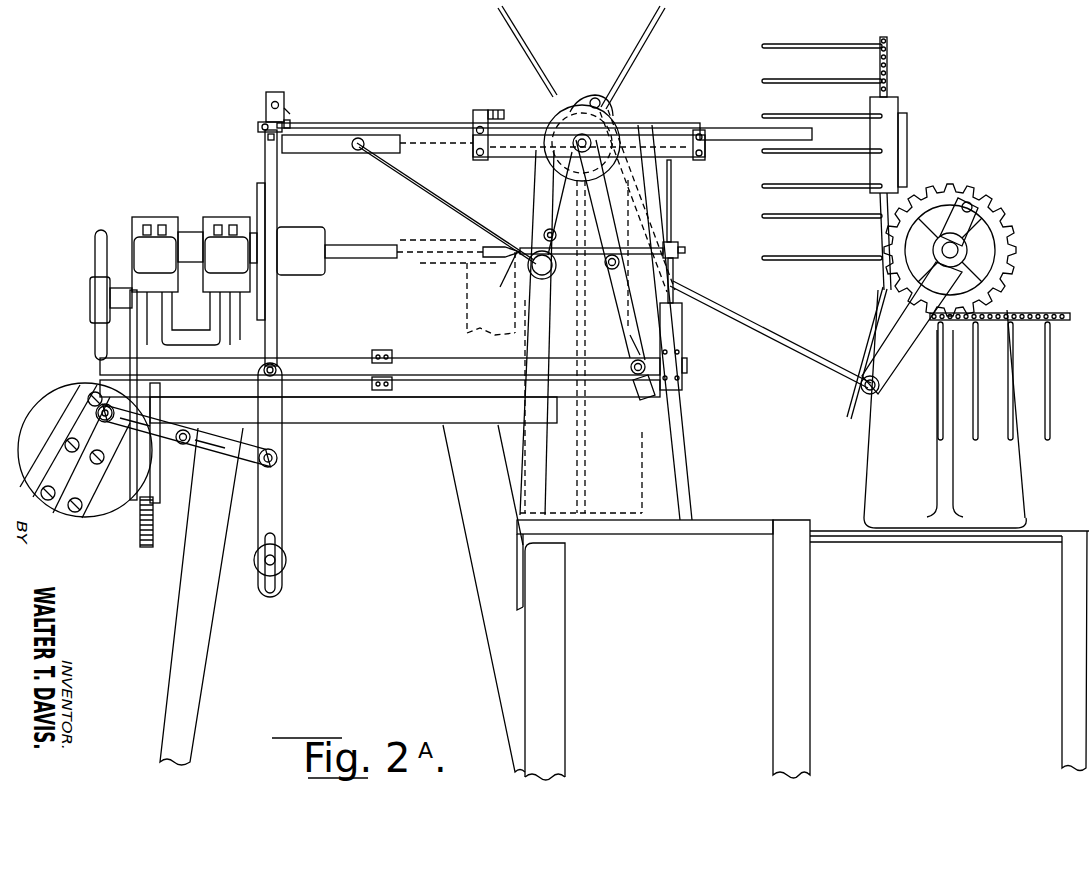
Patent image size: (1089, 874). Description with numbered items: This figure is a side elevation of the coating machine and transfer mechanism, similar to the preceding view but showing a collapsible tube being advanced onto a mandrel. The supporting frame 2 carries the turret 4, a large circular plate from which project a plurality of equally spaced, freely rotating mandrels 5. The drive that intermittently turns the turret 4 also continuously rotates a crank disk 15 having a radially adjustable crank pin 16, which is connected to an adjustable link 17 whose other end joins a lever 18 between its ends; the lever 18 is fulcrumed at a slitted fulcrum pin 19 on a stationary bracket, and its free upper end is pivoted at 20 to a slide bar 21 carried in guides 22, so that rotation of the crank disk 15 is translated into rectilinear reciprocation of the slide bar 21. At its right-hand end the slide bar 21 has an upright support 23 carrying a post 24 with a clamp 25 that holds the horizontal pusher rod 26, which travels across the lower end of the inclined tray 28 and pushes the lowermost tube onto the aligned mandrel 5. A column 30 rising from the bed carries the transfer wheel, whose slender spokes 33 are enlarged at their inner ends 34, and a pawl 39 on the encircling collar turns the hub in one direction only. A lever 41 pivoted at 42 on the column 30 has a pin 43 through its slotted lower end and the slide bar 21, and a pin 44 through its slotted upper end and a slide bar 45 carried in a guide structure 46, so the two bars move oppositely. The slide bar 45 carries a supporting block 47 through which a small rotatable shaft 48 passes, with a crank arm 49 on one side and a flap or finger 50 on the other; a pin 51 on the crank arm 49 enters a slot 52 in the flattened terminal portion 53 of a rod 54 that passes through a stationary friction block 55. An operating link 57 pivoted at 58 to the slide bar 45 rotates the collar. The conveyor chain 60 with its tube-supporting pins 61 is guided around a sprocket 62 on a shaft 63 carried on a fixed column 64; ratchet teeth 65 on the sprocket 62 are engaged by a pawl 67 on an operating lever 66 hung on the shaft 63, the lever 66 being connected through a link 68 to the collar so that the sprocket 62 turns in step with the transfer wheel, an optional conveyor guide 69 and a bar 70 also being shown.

The supporting frame 2 is at (380, 410).
The turret 4 is at (274, 220).
The mandrel 5 is at (348, 247).
The crank disk 15 is at (101, 508).
The crank pin 16 is at (97, 408).
The adjustable link 17 is at (166, 438).
The lever 18 is at (282, 507).
The fulcrum pin 19 is at (286, 560).
The pivotal connection 20 is at (278, 366).
The slide bar 21 is at (432, 360).
The guides 22 is at (384, 350).
The upright support 23 is at (680, 318).
The post 24 is at (675, 272).
The clamp 25 is at (680, 247).
The pusher rod 26 is at (669, 232).
The inclined tray 28 is at (446, 265).
The column 30 is at (648, 432).
The spokes 33 is at (640, 44).
The enlarged inner end 34 is at (610, 104).
The pawl 39 is at (608, 97).
The lever 41 is at (620, 318).
The pivot 42 is at (605, 268).
The pin 43 is at (635, 374).
The pin 44 is at (568, 152).
The slide bar 45 is at (408, 150).
The guide structure 46 is at (655, 133).
The supporting block 47 is at (282, 94).
The rotatable pin or shaft 48 is at (286, 112).
The crank arm 49 is at (270, 118).
The flap or finger 50 is at (290, 125).
The pin 51 is at (262, 131).
The slot 52 is at (258, 128).
The flattened terminal portion 53 is at (269, 141).
The rod 54 is at (345, 123).
The friction block 55 is at (490, 118).
The operating link 57 is at (440, 198).
The pivotal connection 58 is at (357, 151).
The chain 60 is at (888, 62).
The tube-supporting pins 61 is at (808, 44).
The sprocket 62 is at (988, 205).
The shaft 63 is at (945, 255).
The fixed column 64 is at (1014, 490).
The ratchet teeth 65 is at (937, 227).
The operating lever 66 is at (885, 367).
The pawl 67 is at (977, 228).
The link 68 is at (758, 332).
The conveyor guide 69 is at (900, 112).
The bar 70 is at (730, 128).